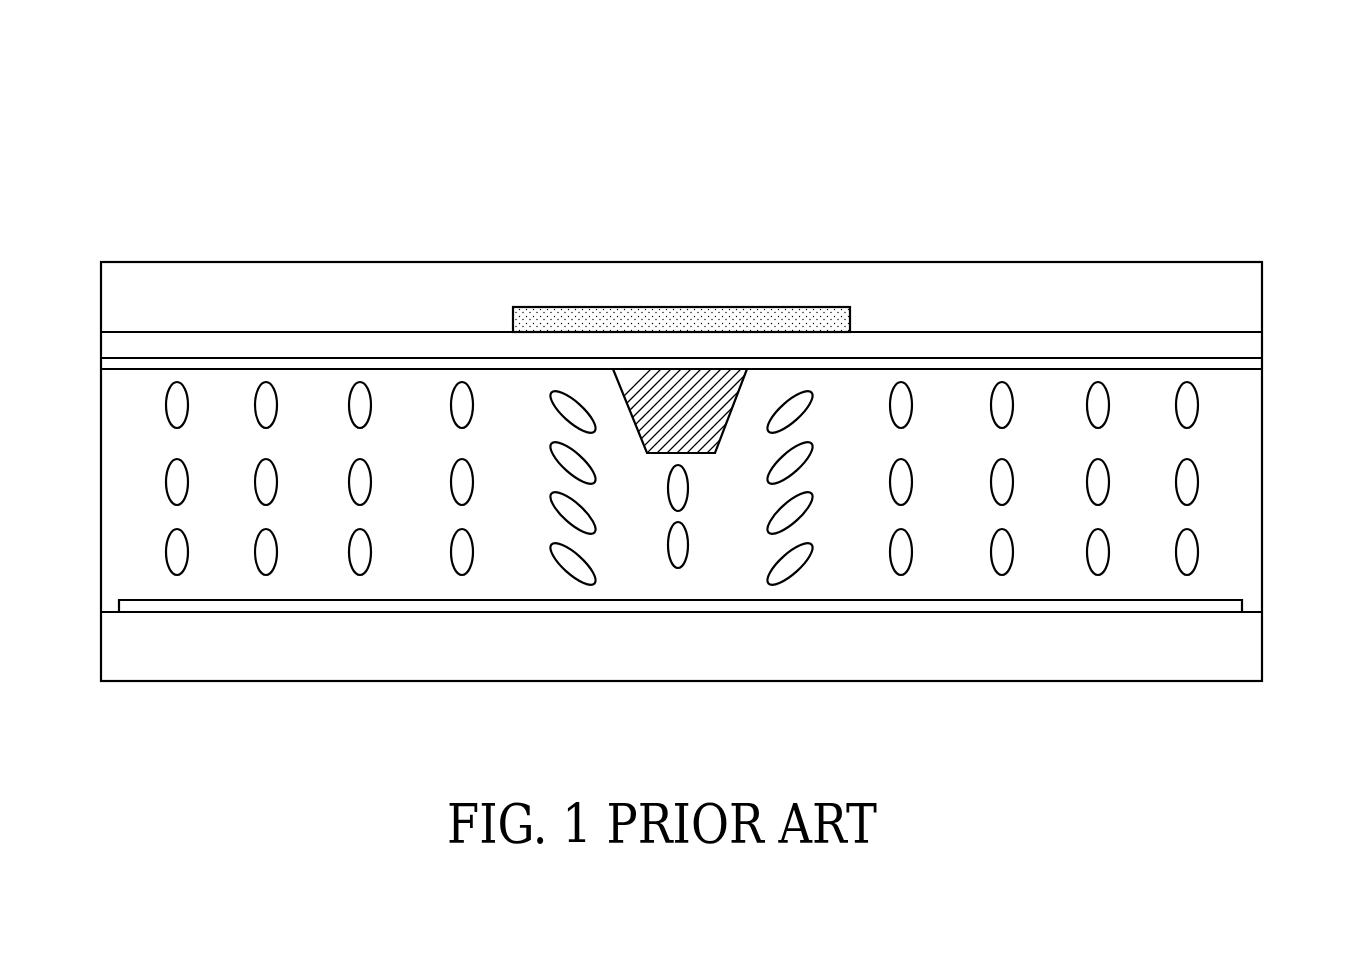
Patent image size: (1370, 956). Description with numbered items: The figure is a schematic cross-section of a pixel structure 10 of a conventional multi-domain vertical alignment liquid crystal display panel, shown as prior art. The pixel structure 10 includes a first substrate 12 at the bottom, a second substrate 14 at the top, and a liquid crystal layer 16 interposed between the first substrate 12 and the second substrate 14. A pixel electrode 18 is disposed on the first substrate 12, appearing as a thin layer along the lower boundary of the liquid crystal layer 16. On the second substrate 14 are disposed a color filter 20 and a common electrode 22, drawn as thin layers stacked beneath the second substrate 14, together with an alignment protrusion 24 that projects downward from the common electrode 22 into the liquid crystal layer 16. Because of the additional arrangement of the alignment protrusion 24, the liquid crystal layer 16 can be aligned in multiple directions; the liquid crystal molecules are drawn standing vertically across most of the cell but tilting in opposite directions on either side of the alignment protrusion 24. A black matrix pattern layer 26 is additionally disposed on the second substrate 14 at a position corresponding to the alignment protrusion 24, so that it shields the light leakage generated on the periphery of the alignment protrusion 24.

The pixel structure 10 is at (1223, 108).
The first substrate 12 is at (1217, 663).
The second substrate 14 is at (1217, 313).
The liquid crystal layer 16 is at (1250, 480).
The pixel electrode 18 is at (1232, 606).
The color filter 20 is at (1250, 345).
The common electrode 22 is at (1250, 365).
The alignment protrusion 24 is at (695, 420).
The black matrix pattern layer 26 is at (687, 312).